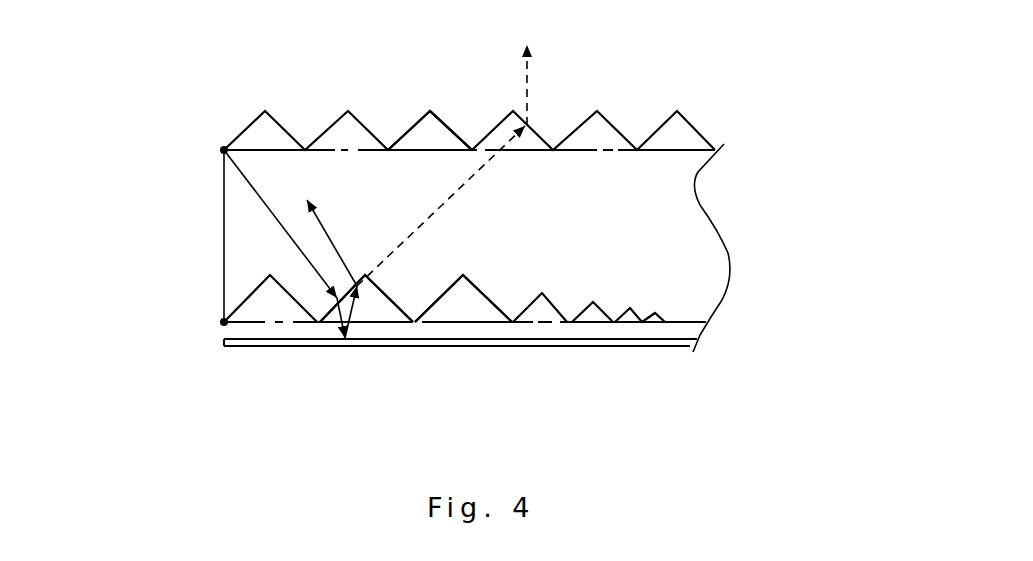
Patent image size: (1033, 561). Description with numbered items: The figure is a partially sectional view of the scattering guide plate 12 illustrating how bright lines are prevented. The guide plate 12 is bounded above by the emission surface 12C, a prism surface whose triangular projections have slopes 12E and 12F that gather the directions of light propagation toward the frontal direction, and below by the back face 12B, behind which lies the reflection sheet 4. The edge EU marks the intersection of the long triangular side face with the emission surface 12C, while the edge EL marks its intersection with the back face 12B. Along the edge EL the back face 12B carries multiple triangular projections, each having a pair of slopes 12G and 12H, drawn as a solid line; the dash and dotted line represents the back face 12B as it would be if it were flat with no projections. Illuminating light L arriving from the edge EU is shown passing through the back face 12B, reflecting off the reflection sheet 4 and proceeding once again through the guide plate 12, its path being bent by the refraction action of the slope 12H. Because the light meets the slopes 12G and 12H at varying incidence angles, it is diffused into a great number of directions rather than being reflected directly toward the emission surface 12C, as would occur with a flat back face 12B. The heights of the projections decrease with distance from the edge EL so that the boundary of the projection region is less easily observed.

The guide plate 12 is at (531, 235).
The back face 12B is at (597, 332).
The emission surface 12C is at (650, 108).
The slope 12E is at (413, 123).
The slope 12F is at (455, 130).
The slope 12G is at (407, 315).
The slope 12H is at (440, 297).
The reflection sheet 4 is at (678, 352).
The illuminating light L is at (325, 228).
The edge EU is at (223, 150).
The edge EL is at (223, 322).